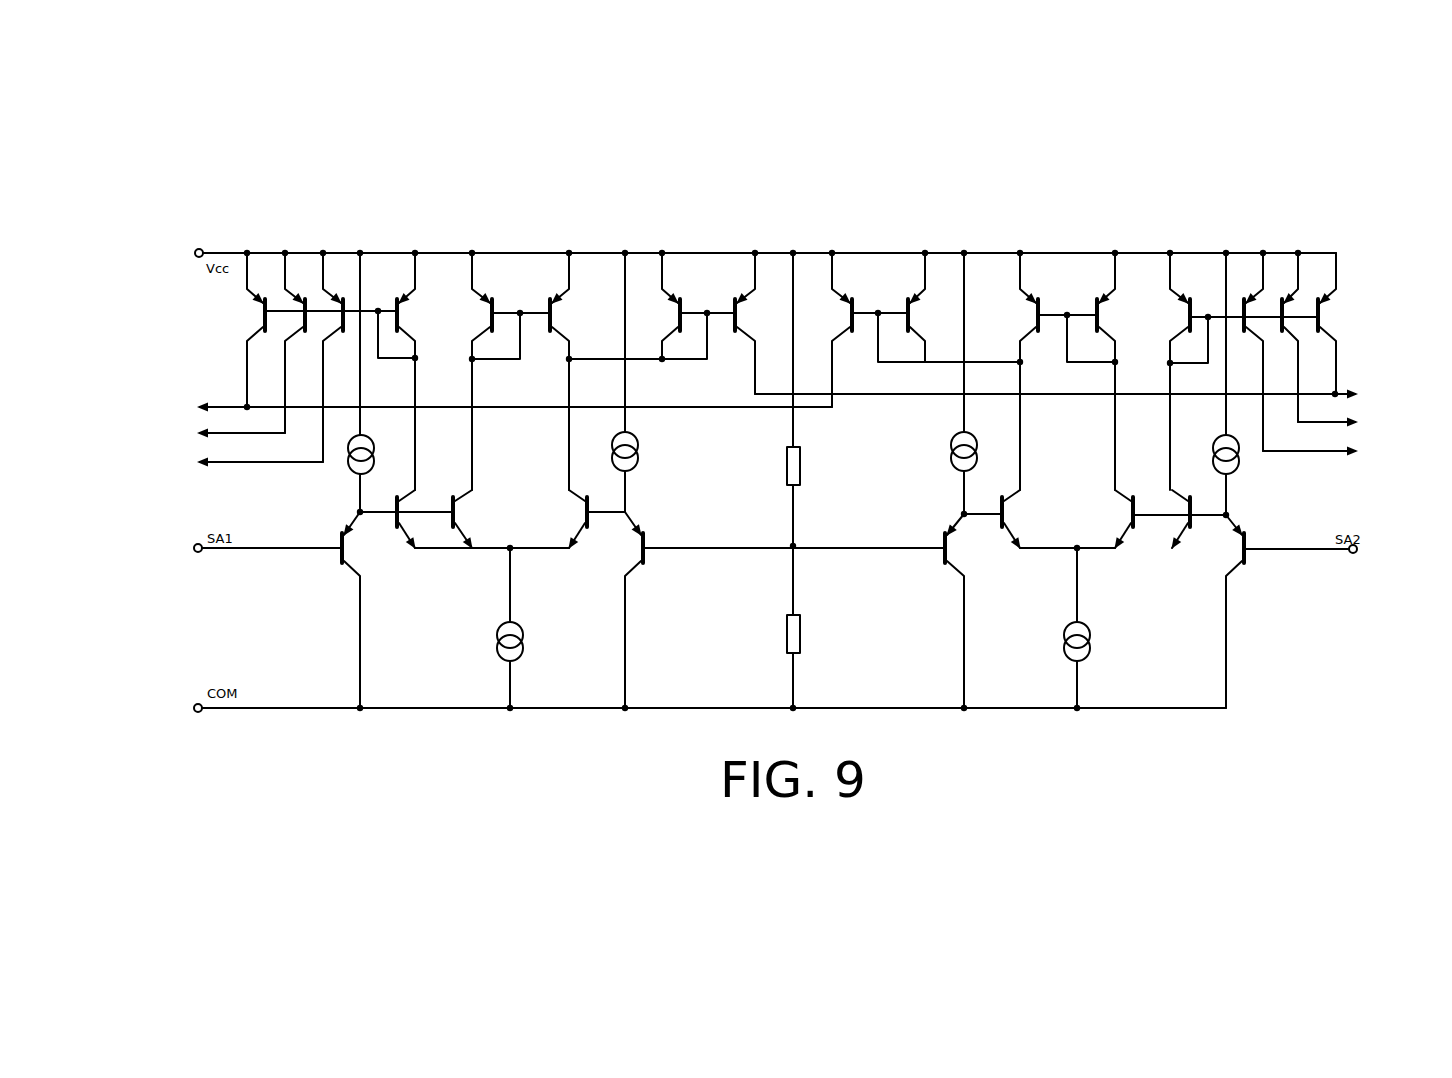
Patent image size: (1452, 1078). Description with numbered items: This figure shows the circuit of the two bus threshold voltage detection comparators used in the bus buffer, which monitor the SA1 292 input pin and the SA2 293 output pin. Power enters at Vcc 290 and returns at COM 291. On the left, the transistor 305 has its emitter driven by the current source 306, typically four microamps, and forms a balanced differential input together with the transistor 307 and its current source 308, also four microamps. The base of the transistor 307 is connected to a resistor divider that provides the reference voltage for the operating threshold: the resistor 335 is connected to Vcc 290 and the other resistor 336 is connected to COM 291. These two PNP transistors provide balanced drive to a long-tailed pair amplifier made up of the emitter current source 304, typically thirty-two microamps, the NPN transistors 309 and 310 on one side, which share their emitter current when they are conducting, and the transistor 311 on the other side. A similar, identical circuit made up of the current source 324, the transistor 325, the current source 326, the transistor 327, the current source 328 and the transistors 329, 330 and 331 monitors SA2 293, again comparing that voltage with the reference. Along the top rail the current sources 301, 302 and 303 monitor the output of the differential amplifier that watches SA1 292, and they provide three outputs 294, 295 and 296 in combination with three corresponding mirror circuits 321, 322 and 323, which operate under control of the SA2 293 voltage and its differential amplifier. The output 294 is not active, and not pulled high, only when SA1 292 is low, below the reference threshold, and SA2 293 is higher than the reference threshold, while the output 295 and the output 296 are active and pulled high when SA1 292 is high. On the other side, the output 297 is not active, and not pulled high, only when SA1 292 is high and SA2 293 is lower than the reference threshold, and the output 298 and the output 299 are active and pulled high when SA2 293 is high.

The Vcc 290 is at (192, 252).
The COM 291 is at (194, 708).
The SA1 input 292 is at (198, 553).
The SA2 output 293 is at (1349, 553).
The output 294 is at (199, 410).
The output 295 is at (199, 437).
The output 296 is at (199, 466).
The output 297 is at (1366, 396).
The output 298 is at (1366, 424).
The output 299 is at (1366, 453).
The current source 301 is at (403, 295).
The current source 302 is at (560, 283).
The current source 303 is at (743, 280).
The emitter current source 304 is at (526, 645).
The transistor 305 is at (340, 547).
The current source 306 is at (347, 464).
The transistor 307 is at (648, 564).
The current source 308 is at (651, 444).
The NPN transistor 309 is at (398, 532).
The NPN transistor 310 is at (465, 536).
The transistor 311 is at (580, 535).
The mirror circuit 321 is at (1325, 295).
The mirror circuit 322 is at (1100, 280).
The mirror circuit 323 is at (915, 280).
The current source 324 is at (1097, 641).
The transistor 325 is at (1254, 560).
The current source 326 is at (1241, 467).
The transistor 327 is at (936, 559).
The current source 328 is at (946, 447).
The transistor 329 is at (1182, 538).
The transistor 330 is at (1124, 538).
The transistor 331 is at (1000, 537).
The resistor 335 is at (805, 466).
The resistor 336 is at (803, 631).